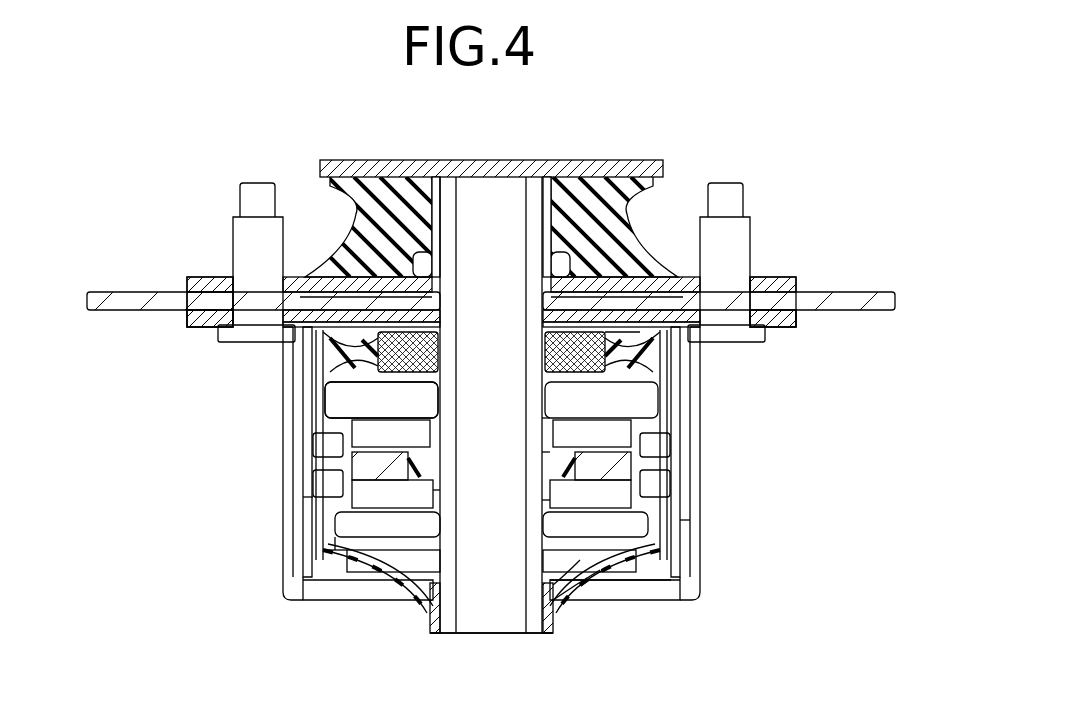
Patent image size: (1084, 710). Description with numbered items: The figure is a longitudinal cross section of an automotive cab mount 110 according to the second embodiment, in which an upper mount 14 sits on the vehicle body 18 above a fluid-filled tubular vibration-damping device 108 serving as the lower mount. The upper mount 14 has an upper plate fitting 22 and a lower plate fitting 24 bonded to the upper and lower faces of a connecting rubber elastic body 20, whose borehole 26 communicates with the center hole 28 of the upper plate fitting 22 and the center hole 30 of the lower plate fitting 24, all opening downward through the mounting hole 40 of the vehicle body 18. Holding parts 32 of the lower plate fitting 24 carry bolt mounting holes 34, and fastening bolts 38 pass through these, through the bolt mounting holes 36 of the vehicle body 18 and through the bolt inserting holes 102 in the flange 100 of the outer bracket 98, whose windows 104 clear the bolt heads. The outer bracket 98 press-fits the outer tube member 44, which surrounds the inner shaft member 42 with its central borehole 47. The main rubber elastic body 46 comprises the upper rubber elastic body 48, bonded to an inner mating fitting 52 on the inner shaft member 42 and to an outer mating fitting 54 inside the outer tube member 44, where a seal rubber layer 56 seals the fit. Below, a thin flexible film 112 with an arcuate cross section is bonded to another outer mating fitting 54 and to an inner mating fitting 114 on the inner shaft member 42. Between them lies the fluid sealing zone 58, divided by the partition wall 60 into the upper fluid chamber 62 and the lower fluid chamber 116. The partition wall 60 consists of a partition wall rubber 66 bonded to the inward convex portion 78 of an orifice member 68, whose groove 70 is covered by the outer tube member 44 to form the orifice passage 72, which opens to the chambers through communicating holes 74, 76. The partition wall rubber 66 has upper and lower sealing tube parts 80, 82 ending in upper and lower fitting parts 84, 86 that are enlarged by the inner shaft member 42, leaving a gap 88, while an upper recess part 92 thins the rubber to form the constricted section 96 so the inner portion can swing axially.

The automotive cab mount 110 is at (748, 104).
The upper mount 14 is at (648, 150).
The connecting rubber elastic body 20 is at (380, 205).
The upper plate fitting 22 is at (582, 170).
The borehole 26 is at (450, 215).
The center hole 28 is at (520, 185).
The center hole 30 is at (546, 282).
The fastening bolt 38 is at (258, 194).
The lower plate fitting 24 is at (192, 274).
The holding part 32 is at (214, 284).
The bolt mounting hole 34 is at (292, 284).
The vehicle body 18 is at (866, 300).
The mounting hole 40 is at (440, 306).
The main rubber elastic body 46 is at (632, 334).
The flange 100 is at (190, 318).
The bolt inserting hole 102 is at (216, 330).
The bolt mounting hole 36 is at (248, 343).
The outer mating fitting 54 is at (320, 347).
The upper fluid chamber 62 is at (318, 395).
The inner mating fitting 52 is at (432, 345).
The upper fitting part 84 is at (545, 422).
The upper rubber elastic body 48 is at (652, 396).
The upper sealing tube part 80 is at (440, 452).
The gap 88 is at (541, 452).
The communicating hole 74 is at (318, 446).
The upper recess part 92 is at (426, 446).
The constricted section 96 is at (566, 446).
The groove 70 is at (662, 440).
The window 104 is at (318, 482).
The inward convex portion 78 is at (538, 472).
The partition wall 60 is at (682, 470).
The orifice passage 72 is at (305, 502).
The outer tube member 44 is at (322, 524).
The lower sealing tube part 82 is at (450, 492).
The communicating hole 76 is at (672, 496).
The lower fitting part 86 is at (538, 500).
The seal rubber layer 56 is at (320, 536).
The fluid-filled tubular vibration-damping device 108 is at (692, 522).
The orifice member 68 is at (330, 555).
The outer bracket 98 is at (701, 567).
The fluid sealing zone 58 is at (328, 592).
The inner mating fitting 114 is at (442, 592).
The lower fluid chamber 116 is at (656, 596).
The borehole 47 is at (466, 636).
The inner shaft member 42 is at (550, 626).
The partition wall rubber 66 is at (572, 565).
The flexible film 112 is at (598, 552).